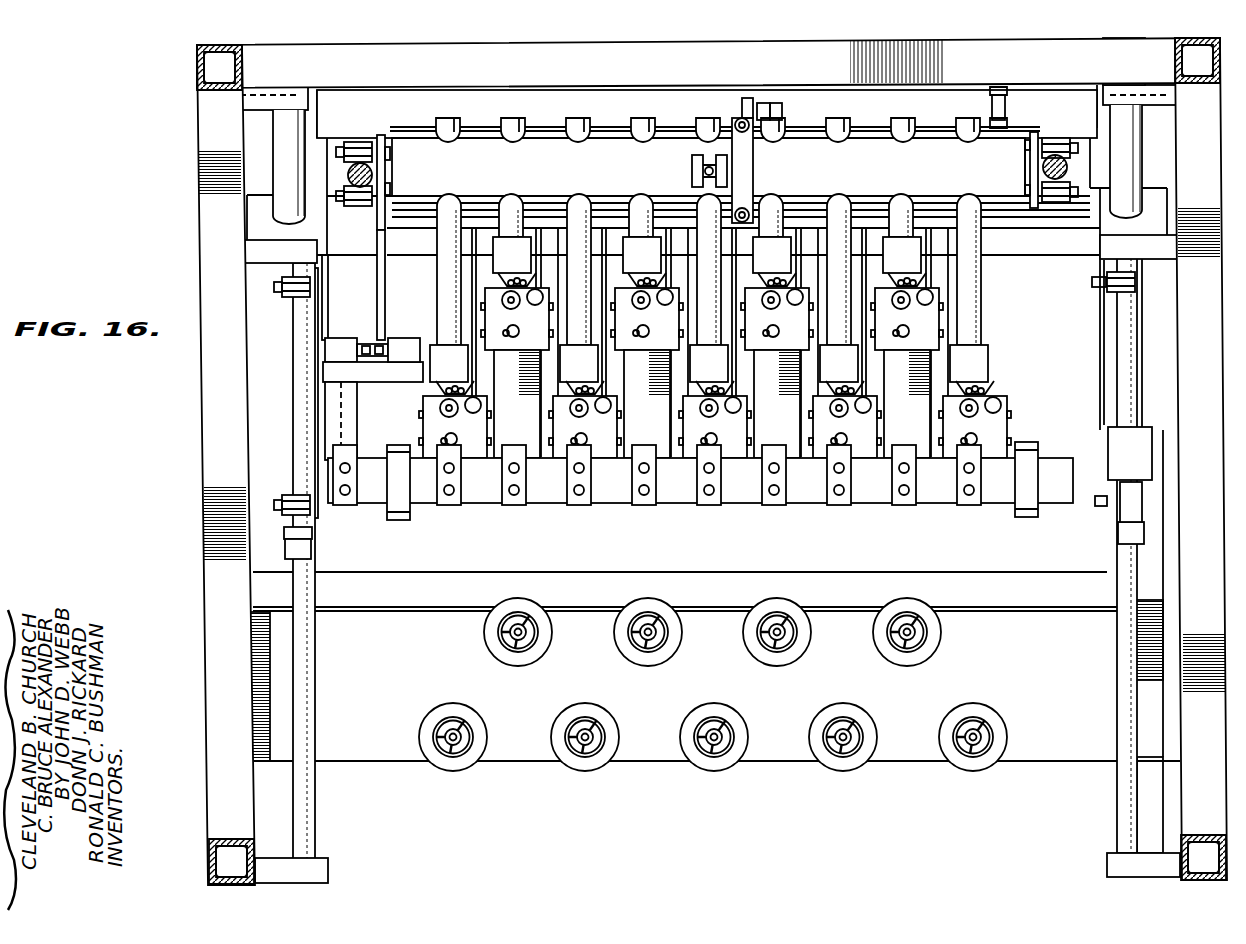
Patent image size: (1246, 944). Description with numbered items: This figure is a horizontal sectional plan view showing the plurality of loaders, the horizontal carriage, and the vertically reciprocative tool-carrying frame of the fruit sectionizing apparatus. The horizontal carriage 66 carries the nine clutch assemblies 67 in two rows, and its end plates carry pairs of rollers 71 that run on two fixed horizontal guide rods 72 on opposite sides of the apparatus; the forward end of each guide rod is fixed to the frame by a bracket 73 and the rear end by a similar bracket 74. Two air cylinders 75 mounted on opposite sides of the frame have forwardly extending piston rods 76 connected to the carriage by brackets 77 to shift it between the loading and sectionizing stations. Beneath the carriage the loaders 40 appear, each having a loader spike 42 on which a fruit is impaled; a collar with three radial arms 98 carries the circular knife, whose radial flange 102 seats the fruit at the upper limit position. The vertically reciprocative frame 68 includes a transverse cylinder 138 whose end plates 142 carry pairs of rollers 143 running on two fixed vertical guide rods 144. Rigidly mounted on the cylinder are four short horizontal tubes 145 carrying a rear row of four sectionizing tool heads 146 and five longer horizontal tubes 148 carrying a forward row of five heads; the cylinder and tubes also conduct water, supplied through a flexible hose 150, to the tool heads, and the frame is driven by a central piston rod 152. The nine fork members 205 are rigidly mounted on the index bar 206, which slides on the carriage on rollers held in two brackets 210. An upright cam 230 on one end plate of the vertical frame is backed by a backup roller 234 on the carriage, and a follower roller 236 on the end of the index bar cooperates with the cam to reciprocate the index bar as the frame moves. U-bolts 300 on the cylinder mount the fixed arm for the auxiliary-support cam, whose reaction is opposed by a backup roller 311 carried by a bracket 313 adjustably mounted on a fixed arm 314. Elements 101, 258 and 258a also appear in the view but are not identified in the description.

The loader 40 is at (630, 664).
The loader spike 42 is at (521, 645).
The horizontal carriage 66 is at (330, 305).
The clutch assemblies 67 is at (690, 403).
The vertically reciprocative frame 68 is at (418, 132).
The rollers 71 is at (292, 300).
The horizontal guide rods 72 is at (293, 400).
The bracket 73 is at (320, 866).
The bracket 74 is at (268, 262).
The air cylinders 75 is at (273, 148).
The piston rods 76 is at (290, 550).
The brackets 77 is at (284, 530).
The radial arms 98 is at (905, 645).
The hub 101 is at (668, 638).
The radial flange 102 is at (650, 610).
The cylinder 138 is at (600, 130).
The end plates 142 is at (380, 135).
The rollers 143 is at (355, 142).
The vertical guide rods 144 is at (350, 180).
The short horizontal tubes 145 is at (515, 215).
The sectionizing tool heads 146 is at (510, 250).
The longer horizontal tubes 148 is at (448, 215).
The flexible hose 150 is at (1000, 88).
The central piston rod 152 is at (690, 170).
The fork members 205 is at (632, 490).
The index bar 206 is at (950, 490).
The brackets 210 is at (398, 520).
The upright cam 230 is at (378, 340).
The backup roller 234 is at (405, 362).
The follower roller 236 is at (323, 350).
The manifold 258 is at (578, 205).
The manifold 258a is at (985, 314).
The U-bolts 300 is at (737, 122).
The backup roller 311 is at (742, 100).
The bracket 313 is at (762, 102).
The fixed arm 314 is at (778, 102).